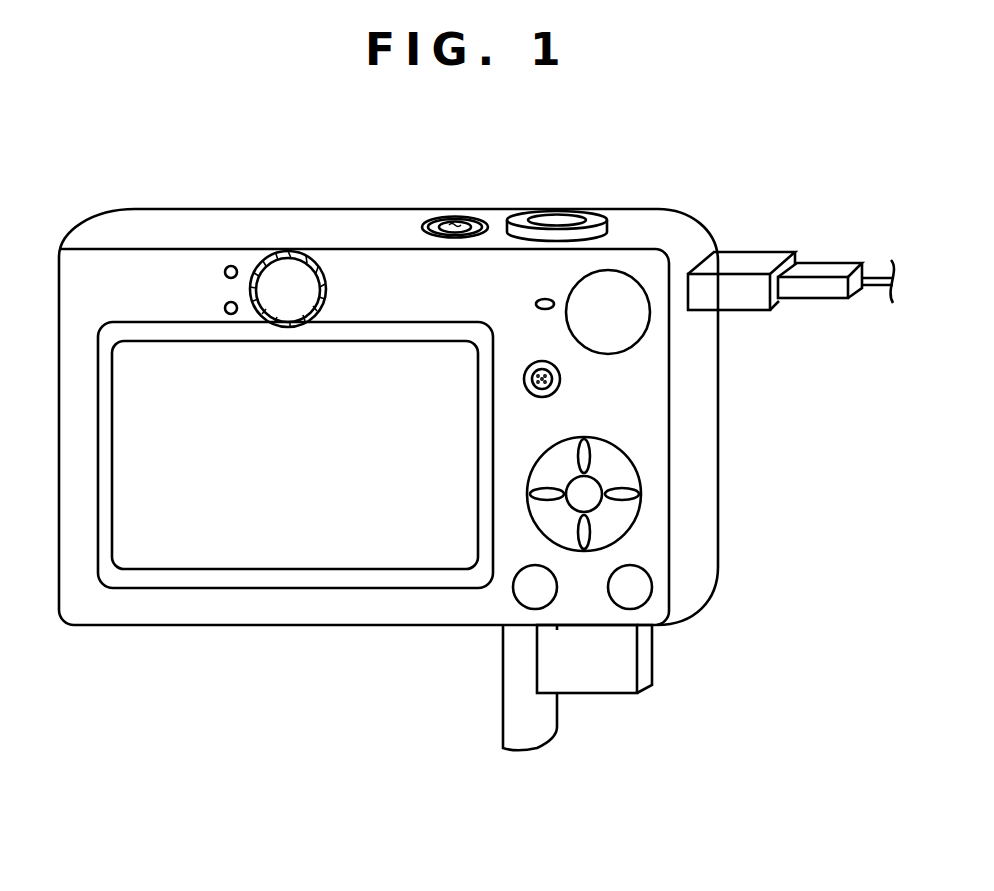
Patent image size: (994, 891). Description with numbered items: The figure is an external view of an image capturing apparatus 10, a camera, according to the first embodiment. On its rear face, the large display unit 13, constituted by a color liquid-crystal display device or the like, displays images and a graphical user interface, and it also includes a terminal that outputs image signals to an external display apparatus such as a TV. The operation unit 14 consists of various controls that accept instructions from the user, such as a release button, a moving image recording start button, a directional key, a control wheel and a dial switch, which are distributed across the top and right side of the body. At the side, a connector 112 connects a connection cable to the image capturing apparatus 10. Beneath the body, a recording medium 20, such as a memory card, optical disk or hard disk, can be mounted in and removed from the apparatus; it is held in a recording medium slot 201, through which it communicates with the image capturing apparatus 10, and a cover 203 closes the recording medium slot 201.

The image capturing apparatus 10 is at (150, 665).
The display unit 13 is at (180, 367).
The operation unit 14 is at (468, 221).
The connector 112 is at (743, 260).
The recording medium 20 is at (608, 683).
The recording medium slot 201 is at (557, 626).
The cover 203 is at (503, 732).